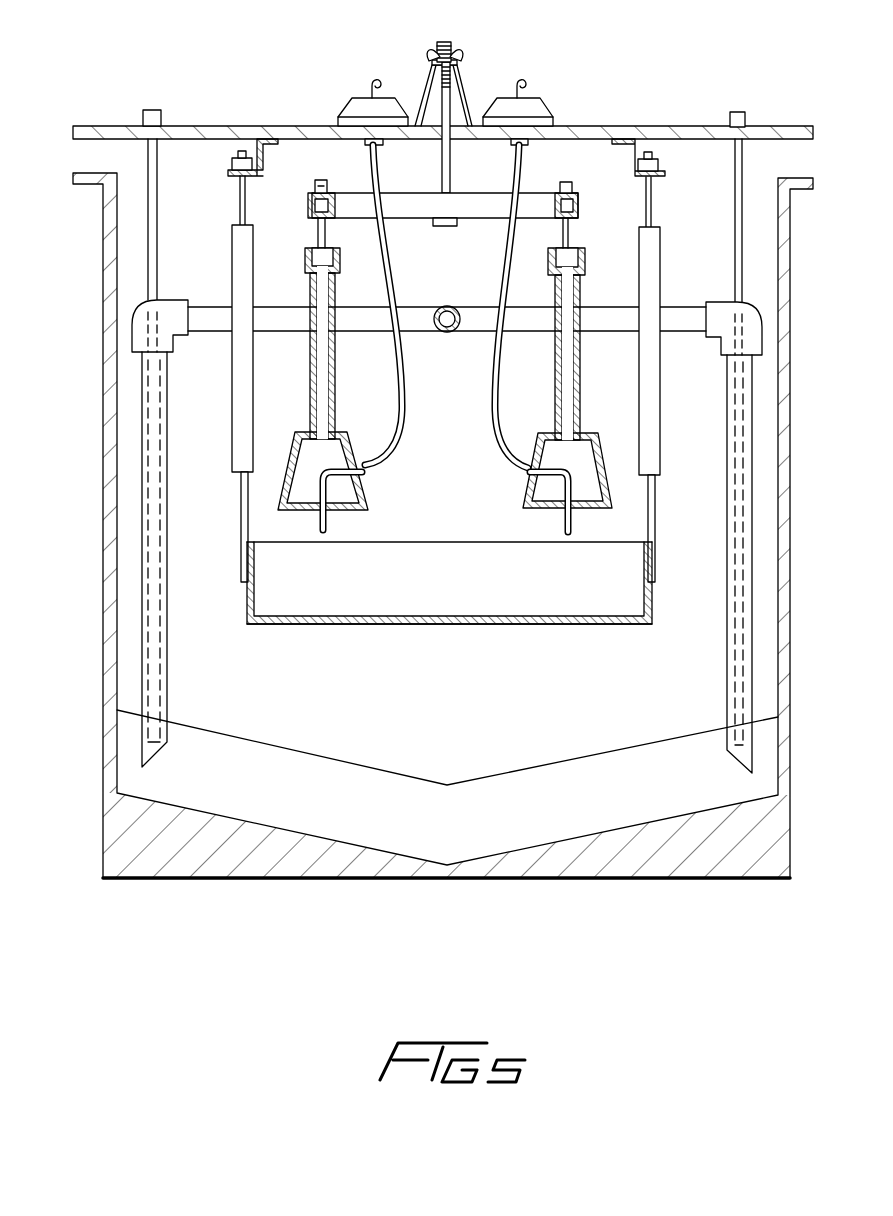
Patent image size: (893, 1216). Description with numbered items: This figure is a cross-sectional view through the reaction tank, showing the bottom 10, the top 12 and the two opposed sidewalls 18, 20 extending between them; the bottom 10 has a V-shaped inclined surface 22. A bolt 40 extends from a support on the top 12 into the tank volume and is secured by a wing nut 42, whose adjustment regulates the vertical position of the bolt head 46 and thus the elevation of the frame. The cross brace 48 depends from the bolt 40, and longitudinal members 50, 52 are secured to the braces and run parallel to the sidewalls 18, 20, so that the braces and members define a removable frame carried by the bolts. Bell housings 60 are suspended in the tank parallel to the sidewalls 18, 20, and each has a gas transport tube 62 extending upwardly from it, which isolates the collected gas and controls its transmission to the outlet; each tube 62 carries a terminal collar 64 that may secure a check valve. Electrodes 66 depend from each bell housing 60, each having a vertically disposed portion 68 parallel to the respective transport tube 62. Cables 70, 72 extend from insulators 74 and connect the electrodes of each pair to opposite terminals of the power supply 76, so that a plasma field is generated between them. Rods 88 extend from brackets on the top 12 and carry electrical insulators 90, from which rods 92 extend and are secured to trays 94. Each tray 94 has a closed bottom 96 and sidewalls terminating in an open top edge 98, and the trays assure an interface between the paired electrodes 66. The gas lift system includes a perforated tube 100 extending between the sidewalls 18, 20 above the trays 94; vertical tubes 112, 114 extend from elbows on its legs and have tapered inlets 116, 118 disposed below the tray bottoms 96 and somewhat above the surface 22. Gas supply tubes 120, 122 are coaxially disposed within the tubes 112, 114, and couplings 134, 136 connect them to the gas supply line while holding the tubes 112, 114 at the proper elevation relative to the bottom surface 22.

The bottom 10 is at (446, 880).
The top 12 is at (590, 128).
The sidewall 18 is at (103, 580).
The sidewall 20 is at (790, 592).
The V-shaped inclined surface 22 is at (477, 790).
The bolt 40 is at (450, 180).
The wing nut 42 is at (462, 50).
The bolt head 46 is at (447, 227).
The cross brace 48 is at (488, 215).
The longitudinal member 50 is at (330, 195).
The longitudinal member 52 is at (578, 208).
The bell housing 60 is at (360, 490).
The gas transport tube 62 is at (336, 298).
The terminal collar 64 is at (340, 262).
The electrode 66 is at (330, 525).
The vertically disposed portion 68 is at (312, 480).
The cable 70 is at (406, 360).
The cable 72 is at (495, 440).
The insulator 74 is at (352, 107).
The power supply 76 is at (468, 82).
The rod 88 is at (243, 198).
The electrical insulator 90 is at (253, 410).
The rod 92 is at (241, 520).
The tray 94 is at (458, 591).
The closed bottom 96 is at (452, 624).
The open top edge 98 is at (430, 542).
The perforated tube 100 is at (456, 310).
The vertical tube 112 is at (167, 685).
The vertical tube 114 is at (727, 685).
The tapered inlet opening 116 is at (155, 758).
The inlet 118 is at (738, 770).
The gas supply tube 120 is at (157, 270).
The gas supply tube 122 is at (735, 268).
The coupling 134 is at (158, 118).
The coupling 136 is at (744, 117).